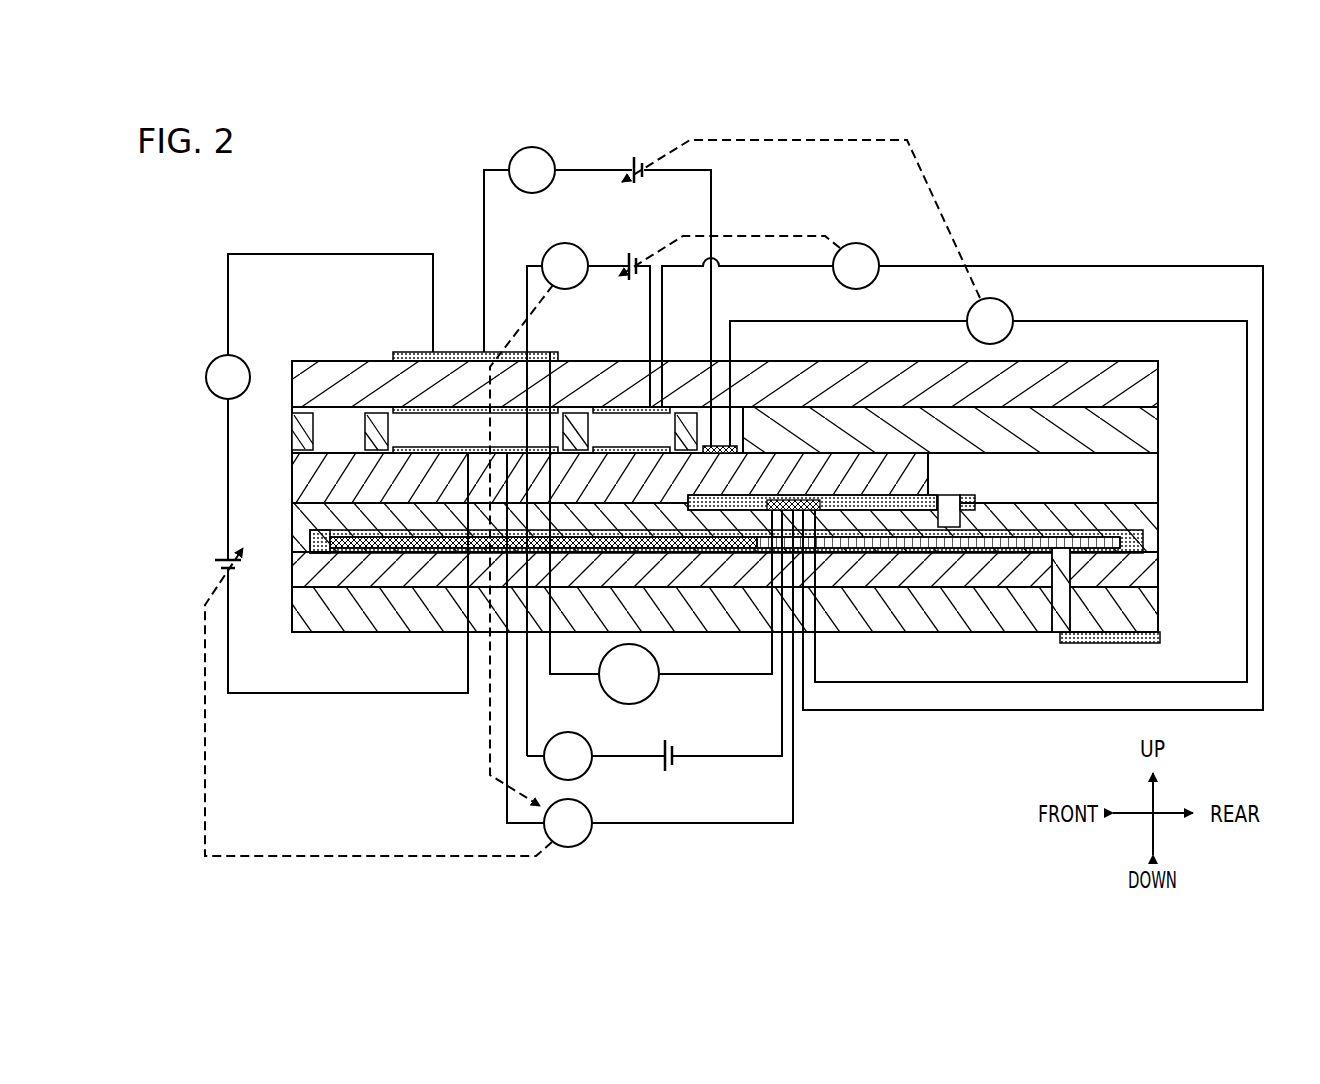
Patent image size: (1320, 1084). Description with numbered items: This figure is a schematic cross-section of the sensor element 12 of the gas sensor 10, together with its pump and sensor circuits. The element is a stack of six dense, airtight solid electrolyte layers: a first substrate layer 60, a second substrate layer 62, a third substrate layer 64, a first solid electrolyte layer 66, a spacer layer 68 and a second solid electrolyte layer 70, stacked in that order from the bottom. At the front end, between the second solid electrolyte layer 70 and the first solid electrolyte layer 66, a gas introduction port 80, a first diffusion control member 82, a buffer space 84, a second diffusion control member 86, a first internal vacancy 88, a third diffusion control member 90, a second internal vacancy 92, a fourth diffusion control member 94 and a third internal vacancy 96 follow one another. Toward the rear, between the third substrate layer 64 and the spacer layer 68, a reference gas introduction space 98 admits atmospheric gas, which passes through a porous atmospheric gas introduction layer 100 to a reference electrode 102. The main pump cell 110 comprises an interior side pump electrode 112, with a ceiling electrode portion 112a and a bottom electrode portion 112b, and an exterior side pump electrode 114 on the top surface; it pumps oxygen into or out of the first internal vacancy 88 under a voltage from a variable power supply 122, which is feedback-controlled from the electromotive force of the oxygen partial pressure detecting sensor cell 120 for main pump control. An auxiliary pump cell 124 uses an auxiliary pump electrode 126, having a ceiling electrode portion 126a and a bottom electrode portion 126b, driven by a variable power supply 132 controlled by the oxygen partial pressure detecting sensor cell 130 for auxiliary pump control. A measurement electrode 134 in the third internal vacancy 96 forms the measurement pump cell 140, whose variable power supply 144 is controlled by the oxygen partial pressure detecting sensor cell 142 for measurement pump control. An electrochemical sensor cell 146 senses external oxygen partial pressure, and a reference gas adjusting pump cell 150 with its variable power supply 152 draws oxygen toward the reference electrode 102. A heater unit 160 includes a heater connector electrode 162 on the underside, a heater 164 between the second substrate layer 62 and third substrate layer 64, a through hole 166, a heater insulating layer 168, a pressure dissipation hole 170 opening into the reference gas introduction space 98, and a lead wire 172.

The gas sensor 10 is at (1103, 210).
The sensor element 12 is at (293, 330).
The first substrate layer 60 is at (1145, 614).
The second substrate layer 62 is at (1145, 572).
The third substrate layer 64 is at (302, 523).
The first solid electrolyte layer 66 is at (300, 482).
The spacer layer 68 is at (1145, 432).
The second solid electrolyte layer 70 is at (1145, 387).
The gas introduction port 80 is at (291, 445).
The first diffusion control member 82 is at (305, 412).
The buffer space 84 is at (340, 425).
The second diffusion control member 86 is at (372, 425).
The first internal vacancy 88 is at (512, 427).
The third diffusion control member 90 is at (573, 415).
The second internal vacancy 92 is at (604, 420).
The fourth diffusion control member 94 is at (706, 422).
The third internal vacancy 96 is at (736, 427).
The reference gas introduction space 98 is at (1145, 480).
The atmospheric gas introduction layer 100 is at (937, 492).
The reference electrode 102 is at (803, 494).
The main pump cell 110 is at (302, 252).
The interior side pump electrode 112 is at (455, 400).
The ceiling electrode portion 112a is at (478, 418).
The bottom electrode portion 112b is at (422, 462).
The exterior side pump electrode 114 is at (420, 352).
The oxygen partial pressure detecting sensor cell for main pump control 120 is at (597, 840).
The variable power supply 122 is at (212, 563).
The auxiliary pump cell 124 is at (586, 475).
The auxiliary pump electrode 126 is at (632, 394).
The ceiling electrode portion 126a is at (613, 420).
The bottom electrode portion 126b is at (633, 465).
The oxygen partial pressure detecting sensor cell for auxiliary pump control 130 is at (1102, 260).
The variable power supply 132 is at (633, 252).
The measurement electrode 134 is at (714, 458).
The measurement pump cell 140 is at (569, 275).
The oxygen partial pressure detecting sensor cell for measurement pump control 142 is at (1102, 317).
The variable power supply 144 is at (637, 156).
The electrochemical sensor cell 146 is at (582, 681).
The reference gas adjusting pump cell 150 is at (654, 666).
The variable power supply 152 is at (641, 772).
The heater unit 160 is at (768, 592).
The heater connector electrode 162 is at (1160, 637).
The heater 164 is at (395, 553).
The through hole 166 is at (1050, 606).
The heater insulating layer 168 is at (317, 553).
The pressure dissipation hole 170 is at (955, 522).
The lead wire 172 is at (863, 549).